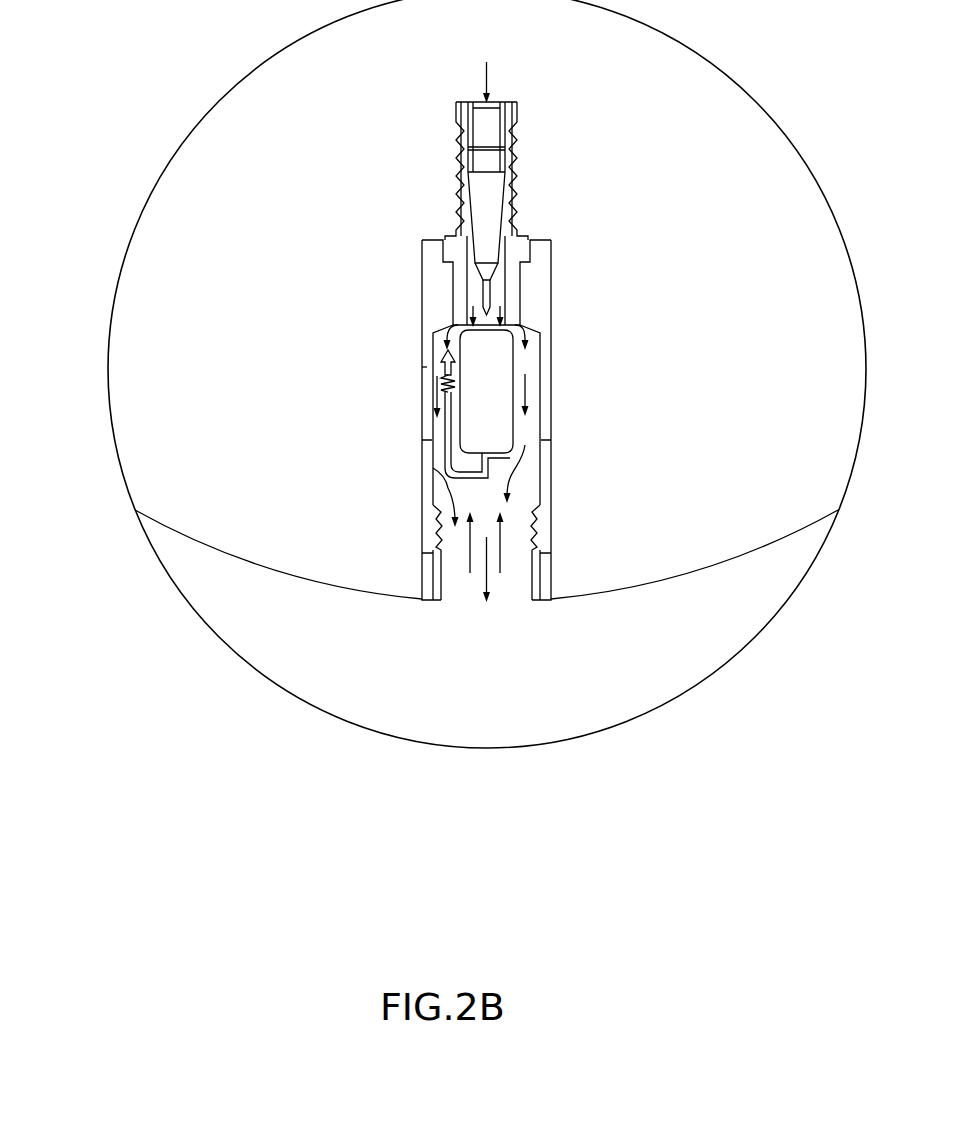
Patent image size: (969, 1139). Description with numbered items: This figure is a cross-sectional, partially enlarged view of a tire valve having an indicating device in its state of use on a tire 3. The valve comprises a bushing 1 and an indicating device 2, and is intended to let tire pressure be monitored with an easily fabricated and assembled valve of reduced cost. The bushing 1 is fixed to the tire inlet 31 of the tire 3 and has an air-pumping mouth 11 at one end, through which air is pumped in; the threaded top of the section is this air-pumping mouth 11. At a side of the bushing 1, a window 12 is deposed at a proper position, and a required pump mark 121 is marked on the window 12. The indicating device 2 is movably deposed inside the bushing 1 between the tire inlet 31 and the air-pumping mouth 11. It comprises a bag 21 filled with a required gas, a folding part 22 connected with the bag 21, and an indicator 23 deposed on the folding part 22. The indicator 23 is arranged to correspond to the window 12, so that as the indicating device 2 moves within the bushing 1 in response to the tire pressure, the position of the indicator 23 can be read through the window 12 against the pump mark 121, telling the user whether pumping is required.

The bushing 1 is at (578, 302).
The air-pumping mouth 11 is at (424, 150).
The window 12 is at (425, 341).
The pump mark 121 is at (427, 403).
The indicating device 2 is at (545, 493).
The bag 21 is at (513, 393).
The folding part 22 is at (438, 336).
The indicator 23 is at (445, 377).
The tire 3 is at (695, 567).
The tire inlet 31 is at (465, 548).